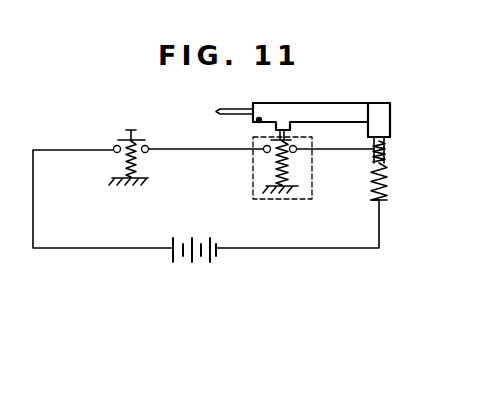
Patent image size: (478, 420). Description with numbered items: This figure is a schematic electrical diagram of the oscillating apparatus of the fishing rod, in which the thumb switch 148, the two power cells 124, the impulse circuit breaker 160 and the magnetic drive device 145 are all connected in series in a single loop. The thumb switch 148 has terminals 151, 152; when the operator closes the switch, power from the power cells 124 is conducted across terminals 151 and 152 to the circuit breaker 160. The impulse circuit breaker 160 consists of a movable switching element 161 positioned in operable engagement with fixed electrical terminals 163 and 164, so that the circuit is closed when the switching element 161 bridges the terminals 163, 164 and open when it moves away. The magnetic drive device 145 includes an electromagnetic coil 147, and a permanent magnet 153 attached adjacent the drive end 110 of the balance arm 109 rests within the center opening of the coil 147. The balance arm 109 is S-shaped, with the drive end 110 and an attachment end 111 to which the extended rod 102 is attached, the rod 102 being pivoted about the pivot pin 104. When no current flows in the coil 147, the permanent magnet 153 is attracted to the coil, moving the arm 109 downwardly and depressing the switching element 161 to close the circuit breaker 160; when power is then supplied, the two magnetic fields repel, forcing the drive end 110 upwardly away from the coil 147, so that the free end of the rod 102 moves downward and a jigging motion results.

The extended rod portion 102 is at (221, 108).
The pivot pin 104 is at (260, 118).
The balance arm 109 is at (338, 93).
The drive end 110 is at (385, 122).
The attachment end 111 is at (252, 118).
The power cells 124 is at (190, 262).
The magnetic drive device 145 is at (388, 199).
The electromagnetic coil 147 is at (384, 181).
The thumb switch 148 is at (129, 125).
The terminal of thumb switch 151 is at (113, 146).
The terminal of thumb switch 152 is at (148, 146).
The permanent magnet 153 is at (386, 155).
The impulse circuit breaker 160 is at (283, 175).
The movable switching element 161 is at (286, 137).
The fixed electrical terminal 163 is at (297, 152).
The fixed electrical terminal 164 is at (264, 153).